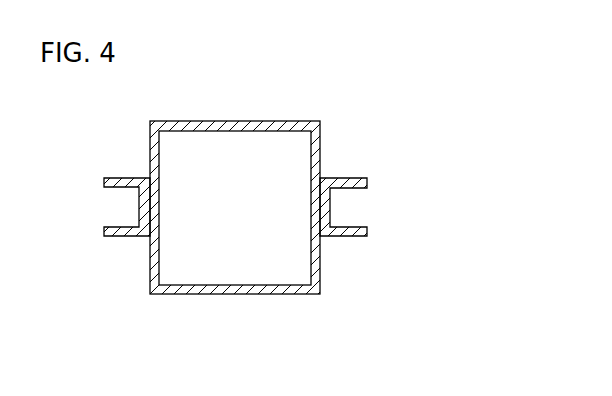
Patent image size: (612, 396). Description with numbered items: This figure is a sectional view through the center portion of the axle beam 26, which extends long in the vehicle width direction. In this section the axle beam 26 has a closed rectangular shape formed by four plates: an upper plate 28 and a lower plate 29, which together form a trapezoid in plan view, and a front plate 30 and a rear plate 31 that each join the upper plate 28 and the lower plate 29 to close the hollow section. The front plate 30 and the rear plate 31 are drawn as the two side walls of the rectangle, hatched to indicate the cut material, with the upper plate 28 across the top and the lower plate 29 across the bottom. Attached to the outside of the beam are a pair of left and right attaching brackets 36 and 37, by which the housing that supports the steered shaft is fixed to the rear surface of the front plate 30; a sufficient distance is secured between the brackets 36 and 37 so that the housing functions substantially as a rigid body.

The axle beam 26 is at (234, 201).
The upper plate 28 is at (241, 120).
The lower plate 29 is at (248, 296).
The front plate 30 is at (150, 148).
The rear plate 31 is at (322, 140).
The attaching bracket 36 is at (110, 240).
The attaching bracket 37 is at (360, 238).